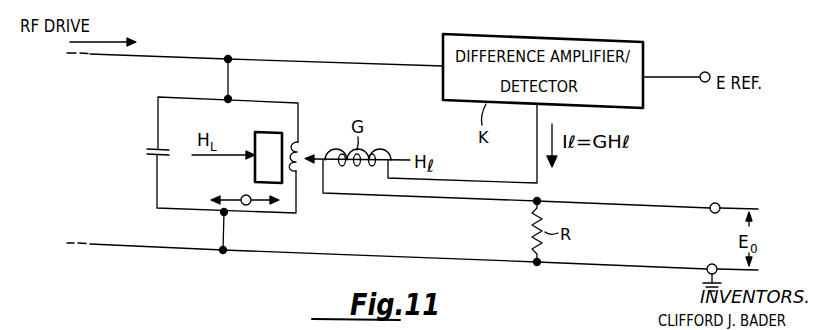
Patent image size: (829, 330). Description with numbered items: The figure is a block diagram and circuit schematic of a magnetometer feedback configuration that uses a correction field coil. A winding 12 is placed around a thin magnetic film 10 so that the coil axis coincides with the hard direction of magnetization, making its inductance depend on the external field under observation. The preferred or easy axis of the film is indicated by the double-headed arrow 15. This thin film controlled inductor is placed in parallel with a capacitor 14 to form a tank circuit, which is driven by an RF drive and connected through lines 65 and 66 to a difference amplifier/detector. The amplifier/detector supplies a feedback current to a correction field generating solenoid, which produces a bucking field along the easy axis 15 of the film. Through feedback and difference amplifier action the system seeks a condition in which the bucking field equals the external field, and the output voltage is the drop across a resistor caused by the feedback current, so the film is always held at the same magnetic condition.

The thin magnetic film 10 is at (257, 130).
The winding 12 is at (298, 149).
The capacitor 14 is at (150, 153).
The easy axis 15 is at (215, 198).
The line 65 is at (118, 251).
The line 66 is at (161, 57).